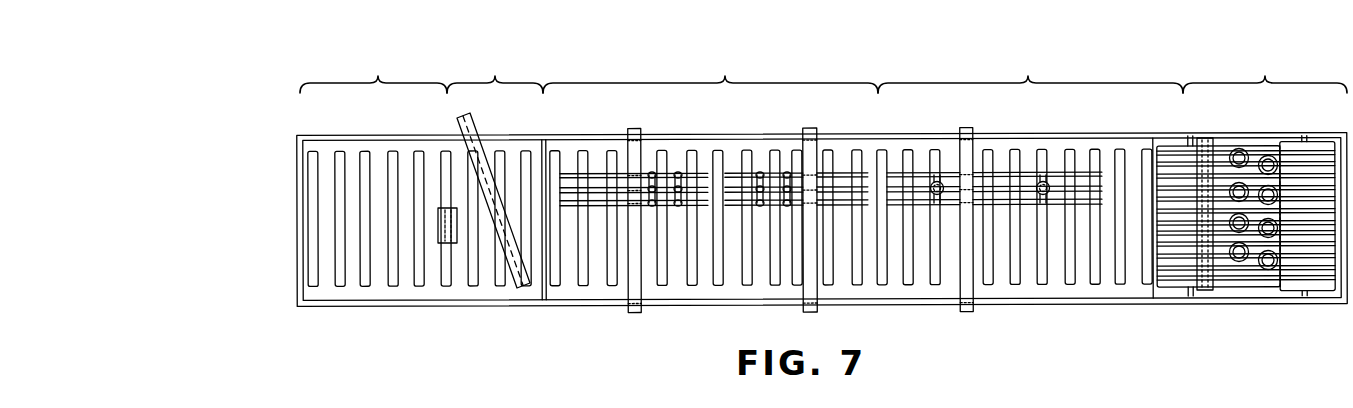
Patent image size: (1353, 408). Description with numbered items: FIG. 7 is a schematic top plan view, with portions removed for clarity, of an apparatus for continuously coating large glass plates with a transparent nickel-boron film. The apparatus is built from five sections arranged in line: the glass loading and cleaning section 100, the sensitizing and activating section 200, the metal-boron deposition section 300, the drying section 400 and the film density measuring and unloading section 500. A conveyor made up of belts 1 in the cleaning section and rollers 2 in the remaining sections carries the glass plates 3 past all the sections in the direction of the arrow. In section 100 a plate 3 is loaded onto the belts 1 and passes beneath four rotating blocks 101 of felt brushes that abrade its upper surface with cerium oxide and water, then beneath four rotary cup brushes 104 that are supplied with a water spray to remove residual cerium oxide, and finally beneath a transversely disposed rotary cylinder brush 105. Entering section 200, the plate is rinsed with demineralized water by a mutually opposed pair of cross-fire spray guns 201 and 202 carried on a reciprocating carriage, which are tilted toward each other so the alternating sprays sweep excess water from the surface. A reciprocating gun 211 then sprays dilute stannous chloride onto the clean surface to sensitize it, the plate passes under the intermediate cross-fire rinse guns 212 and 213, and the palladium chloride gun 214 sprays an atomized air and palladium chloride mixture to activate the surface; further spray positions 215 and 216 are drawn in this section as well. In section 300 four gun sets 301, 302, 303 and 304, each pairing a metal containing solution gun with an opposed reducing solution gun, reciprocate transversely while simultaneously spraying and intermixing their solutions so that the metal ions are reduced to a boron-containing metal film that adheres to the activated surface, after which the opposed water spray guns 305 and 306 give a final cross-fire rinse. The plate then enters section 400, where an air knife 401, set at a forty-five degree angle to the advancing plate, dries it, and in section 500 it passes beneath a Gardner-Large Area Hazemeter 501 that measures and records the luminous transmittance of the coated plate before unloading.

The belts 1 is at (1235, 267).
The rollers 2 is at (340, 211).
The glass plates 3 is at (1293, 258).
The glass loading and cleaning section 100 is at (1267, 61).
The rotating blocks 101 is at (1268, 155).
The rotary cup brushes 104 is at (1238, 148).
The rotary cylinder brush 105 is at (1202, 285).
The sensitizing and activating section 200 is at (1028, 65).
The spray gun 201 is at (1083, 206).
The spray gun 202 is at (1083, 175).
The reciprocating gun 211 is at (1043, 181).
The cross-fire rinse gun 212 is at (1000, 206).
The cross-fire rinse gun 213 is at (1000, 175).
The palladium chloride gun 214 is at (937, 181).
The lower rail 215 is at (896, 206).
The upper rail 216 is at (895, 175).
The metal-boron deposition section 300 is at (725, 63).
The gun set 301 is at (788, 172).
The gun set 302 is at (760, 172).
The gun set 303 is at (679, 172).
The gun set 304 is at (652, 172).
The water spray gun 305 is at (572, 206).
The water spray gun 306 is at (573, 175).
The drying section 400 is at (498, 63).
The air knife 401 is at (517, 286).
The film density measuring and unloading section 500 is at (380, 63).
The Gardner-Large Area Hazemeter 501 is at (440, 244).